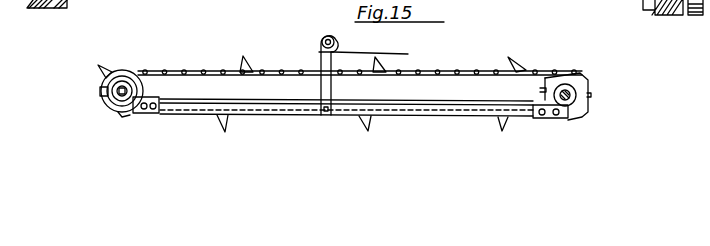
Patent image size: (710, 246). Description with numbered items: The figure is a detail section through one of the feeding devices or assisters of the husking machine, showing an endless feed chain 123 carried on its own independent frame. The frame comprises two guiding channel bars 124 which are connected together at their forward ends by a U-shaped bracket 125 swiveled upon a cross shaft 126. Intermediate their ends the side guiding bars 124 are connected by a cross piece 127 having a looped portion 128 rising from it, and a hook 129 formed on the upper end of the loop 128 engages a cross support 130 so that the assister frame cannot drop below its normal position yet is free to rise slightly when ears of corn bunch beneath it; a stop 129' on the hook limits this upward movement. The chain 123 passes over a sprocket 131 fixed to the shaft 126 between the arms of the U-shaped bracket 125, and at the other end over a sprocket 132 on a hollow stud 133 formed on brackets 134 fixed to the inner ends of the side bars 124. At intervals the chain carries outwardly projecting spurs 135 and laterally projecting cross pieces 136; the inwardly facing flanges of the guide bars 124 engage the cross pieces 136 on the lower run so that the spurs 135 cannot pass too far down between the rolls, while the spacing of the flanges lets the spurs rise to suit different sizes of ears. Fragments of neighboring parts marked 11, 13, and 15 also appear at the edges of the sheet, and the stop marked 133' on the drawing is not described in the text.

The frame member (adjacent figure fragment) 11 is at (27, 1).
The support (adjacent figure fragment) 13 is at (697, 17).
The figure fragment 15 is at (483, 8).
The feed chain 123 is at (443, 72).
The guiding channel bar 124 is at (456, 112).
The U-shaped bracket 125 is at (549, 101).
The cross shaft 126 is at (576, 93).
The cross piece 127 is at (331, 92).
The looped portion 128 is at (318, 79).
The hook 129 is at (323, 60).
The stop 129' is at (391, 52).
The cross support 130 is at (336, 39).
The sprocket 131 is at (580, 78).
The sprocket 132 is at (106, 97).
The hollow stud 133 is at (122, 114).
The sprocket guard finger 133' is at (134, 54).
The bracket 134 is at (128, 108).
The spur 135 is at (246, 64).
The cross piece 136 is at (488, 76).